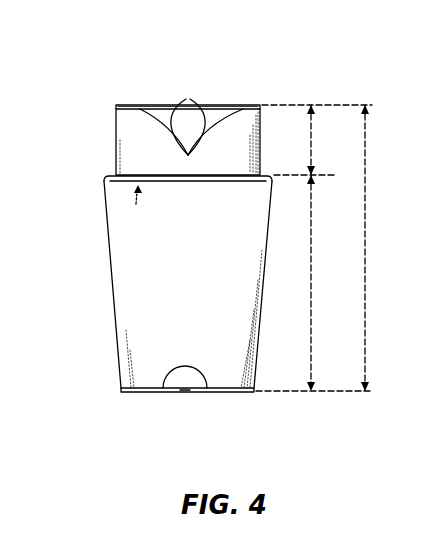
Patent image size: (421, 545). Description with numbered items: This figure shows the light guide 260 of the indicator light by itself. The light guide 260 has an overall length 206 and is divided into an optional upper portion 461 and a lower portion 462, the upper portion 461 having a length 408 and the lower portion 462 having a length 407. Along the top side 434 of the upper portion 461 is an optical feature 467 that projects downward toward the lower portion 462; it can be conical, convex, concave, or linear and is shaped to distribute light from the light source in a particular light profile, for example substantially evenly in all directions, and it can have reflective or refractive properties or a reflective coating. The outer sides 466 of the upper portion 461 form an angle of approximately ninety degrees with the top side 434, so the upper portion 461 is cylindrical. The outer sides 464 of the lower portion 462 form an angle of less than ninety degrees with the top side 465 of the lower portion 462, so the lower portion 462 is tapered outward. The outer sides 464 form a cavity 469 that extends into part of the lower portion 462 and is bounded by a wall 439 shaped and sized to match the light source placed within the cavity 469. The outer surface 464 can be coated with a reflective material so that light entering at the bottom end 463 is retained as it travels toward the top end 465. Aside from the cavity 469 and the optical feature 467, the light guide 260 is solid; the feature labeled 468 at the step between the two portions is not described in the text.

The light guide 260 is at (303, 62).
The length 206 is at (365, 249).
The length 407 is at (311, 284).
The length 408 is at (312, 138).
The top side 434 is at (255, 103).
The wall 439 is at (178, 365).
The upper portion 461 is at (100, 103).
The lower portion 462 is at (100, 178).
The bottom end 463 is at (233, 393).
The outer sides 464 is at (258, 345).
The top side 465 is at (268, 173).
The outer sides 466 is at (114, 112).
The optical feature 467 is at (188, 100).
The step 468 is at (110, 213).
The cavity 469 is at (185, 390).